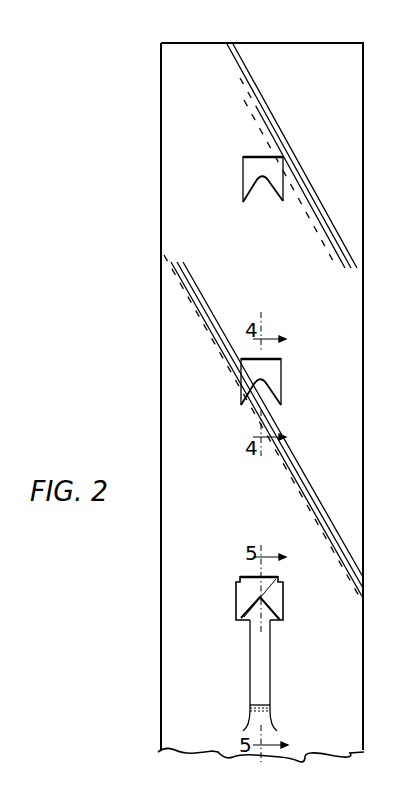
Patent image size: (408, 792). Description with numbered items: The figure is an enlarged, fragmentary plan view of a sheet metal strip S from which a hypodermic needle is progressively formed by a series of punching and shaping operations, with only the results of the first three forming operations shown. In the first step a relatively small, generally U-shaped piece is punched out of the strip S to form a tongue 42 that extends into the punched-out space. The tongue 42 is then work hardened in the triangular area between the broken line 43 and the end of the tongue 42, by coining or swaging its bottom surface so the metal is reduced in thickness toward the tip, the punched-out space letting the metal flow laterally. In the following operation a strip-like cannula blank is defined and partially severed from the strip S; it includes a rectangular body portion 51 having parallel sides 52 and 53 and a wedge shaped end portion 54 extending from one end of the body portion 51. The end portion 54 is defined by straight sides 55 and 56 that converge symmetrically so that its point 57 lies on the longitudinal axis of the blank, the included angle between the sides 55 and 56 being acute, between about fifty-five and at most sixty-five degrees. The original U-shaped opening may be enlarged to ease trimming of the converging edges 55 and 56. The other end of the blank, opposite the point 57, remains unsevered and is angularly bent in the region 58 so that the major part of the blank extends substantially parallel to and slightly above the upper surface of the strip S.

The sheet metal strip S is at (178, 113).
The tongue 42 is at (262, 186).
The broken line 43 is at (263, 386).
The rectangular body portion 51 is at (250, 658).
The side 52 is at (250, 683).
The side 53 is at (270, 682).
The wedge shaped end portion 54 is at (261, 606).
The straight side 55 is at (253, 601).
The straight side 56 is at (265, 602).
The point 57 is at (276, 579).
The bend region 58 is at (250, 717).